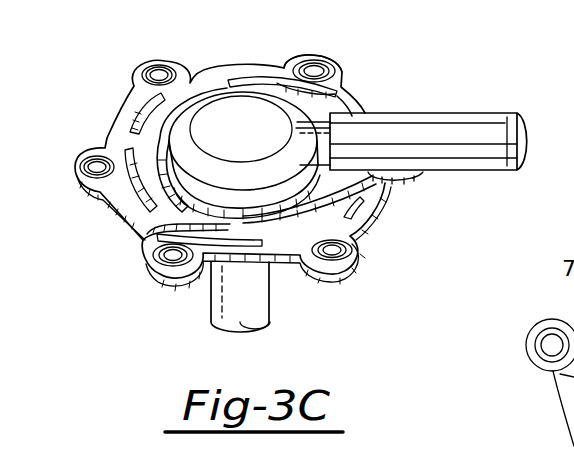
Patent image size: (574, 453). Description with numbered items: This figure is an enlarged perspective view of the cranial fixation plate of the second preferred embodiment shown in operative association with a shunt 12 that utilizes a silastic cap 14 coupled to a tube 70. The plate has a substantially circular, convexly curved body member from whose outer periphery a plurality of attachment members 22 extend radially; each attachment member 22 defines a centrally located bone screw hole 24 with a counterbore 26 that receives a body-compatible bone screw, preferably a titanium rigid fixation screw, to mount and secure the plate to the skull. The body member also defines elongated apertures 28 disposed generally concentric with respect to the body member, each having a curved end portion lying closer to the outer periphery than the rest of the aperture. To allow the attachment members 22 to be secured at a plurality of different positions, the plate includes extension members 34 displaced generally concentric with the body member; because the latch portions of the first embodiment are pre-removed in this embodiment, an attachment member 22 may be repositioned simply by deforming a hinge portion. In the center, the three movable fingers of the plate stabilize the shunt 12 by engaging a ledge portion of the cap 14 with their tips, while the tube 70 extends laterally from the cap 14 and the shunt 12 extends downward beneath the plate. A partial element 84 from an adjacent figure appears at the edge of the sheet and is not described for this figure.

The shunt 12 is at (257, 302).
The silastic cap 14 is at (236, 122).
The attachment member 22 is at (292, 66).
The bone screw hole 24 is at (318, 69).
The counterbore 26 is at (160, 64).
The elongated aperture 28 is at (360, 217).
The extension member 34 is at (118, 126).
The tube 70 is at (447, 138).
The fragment element 84 is at (555, 378).